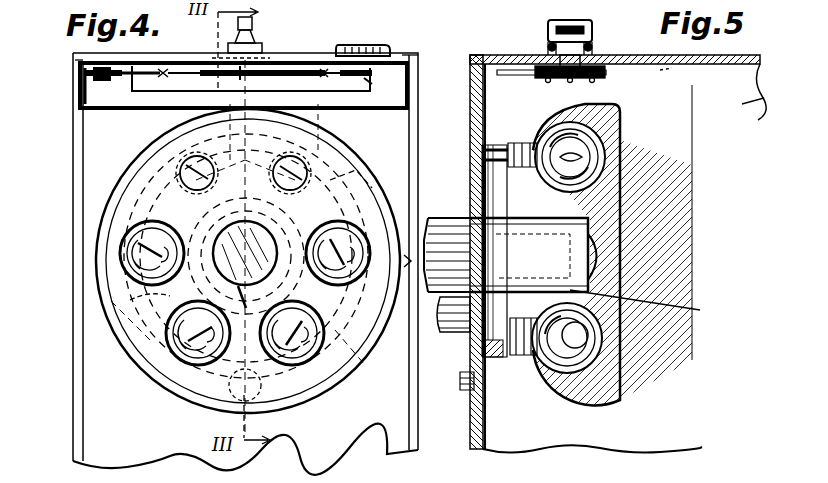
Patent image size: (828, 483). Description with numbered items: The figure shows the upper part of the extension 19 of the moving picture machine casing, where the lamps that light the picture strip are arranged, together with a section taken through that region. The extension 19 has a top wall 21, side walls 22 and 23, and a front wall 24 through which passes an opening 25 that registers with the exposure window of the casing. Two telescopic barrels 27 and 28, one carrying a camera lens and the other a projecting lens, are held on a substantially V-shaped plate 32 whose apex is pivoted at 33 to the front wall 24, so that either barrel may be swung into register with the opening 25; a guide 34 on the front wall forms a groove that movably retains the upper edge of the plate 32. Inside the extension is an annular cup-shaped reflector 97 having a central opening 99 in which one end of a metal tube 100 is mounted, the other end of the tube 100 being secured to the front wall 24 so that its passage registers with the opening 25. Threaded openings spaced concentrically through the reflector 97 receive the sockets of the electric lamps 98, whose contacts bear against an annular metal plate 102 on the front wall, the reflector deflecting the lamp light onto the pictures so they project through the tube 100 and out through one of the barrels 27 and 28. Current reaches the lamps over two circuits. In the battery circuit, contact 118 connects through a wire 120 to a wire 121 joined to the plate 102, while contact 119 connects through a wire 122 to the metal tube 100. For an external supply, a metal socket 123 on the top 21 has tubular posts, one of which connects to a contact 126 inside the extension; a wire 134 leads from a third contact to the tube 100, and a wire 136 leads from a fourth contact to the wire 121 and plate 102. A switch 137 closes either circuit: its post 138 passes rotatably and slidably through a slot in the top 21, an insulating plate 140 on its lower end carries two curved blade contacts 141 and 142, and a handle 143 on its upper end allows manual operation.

In FIG. 4, the extension 19 is at (80, 158).
In FIG. 5, the extension 19 is at (472, 74).
In FIG. 4, the top wall 21 is at (410, 60).
In FIG. 5, the top wall 21 is at (762, 56).
In FIG. 4, the side wall 22 is at (83, 382).
In FIG. 5, the side wall 22 is at (478, 450).
In FIG. 5, the side wall 23 is at (472, 426).
In FIG. 4, the front wall 24 is at (80, 124).
In FIG. 5, the front wall 24 is at (764, 98).
In FIG. 4, the opening 25 is at (268, 242).
In FIG. 5, the opening 25 is at (458, 216).
In FIG. 4, the telescopic barrel 27 is at (344, 338).
In FIG. 5, the telescopic barrel 27 is at (430, 216).
In FIG. 5, the telescopic barrel 28 is at (447, 334).
In FIG. 4, the V-shaped plate 32 is at (290, 392).
In FIG. 4, the pivot 33 is at (218, 405).
In FIG. 4, the guide 34 is at (360, 172).
In FIG. 4, the reflector 97 is at (128, 360).
In FIG. 5, the reflector 97 is at (622, 402).
In FIG. 4, the electric lamps 98 is at (148, 222).
In FIG. 5, the electric lamps 98 is at (640, 168).
In FIG. 4, the opening 99 is at (242, 306).
In FIG. 5, the opening 99 is at (700, 310).
In FIG. 4, the metal tube 100 is at (148, 300).
In FIG. 5, the metal tube 100 is at (520, 356).
In FIG. 4, the annular metal plate 102 is at (196, 156).
In FIG. 5, the annular metal plate 102 is at (472, 164).
In FIG. 4, the contact 118 is at (148, 66).
In FIG. 4, the contact 119 is at (82, 75).
In FIG. 4, the wire 120 is at (152, 97).
In FIG. 4, the wire 121 is at (326, 140).
In FIG. 5, the wire 121 is at (488, 142).
In FIG. 4, the wire 122 is at (110, 110).
In FIG. 5, the wire 122 is at (490, 150).
In FIG. 4, the metal socket 123 is at (386, 46).
In FIG. 5, the metal socket 123 is at (598, 52).
In FIG. 4, the contact 126 is at (336, 66).
In FIG. 4, the wire 134 is at (355, 110).
In FIG. 4, the wire 136 is at (366, 80).
In FIG. 4, the switch 137 is at (250, 45).
In FIG. 5, the switch 137 is at (546, 46).
In FIG. 4, the post 138 is at (214, 56).
In FIG. 5, the post 138 is at (660, 68).
In FIG. 4, the insulating plate 140 is at (266, 64).
In FIG. 5, the insulating plate 140 is at (608, 78).
In FIG. 4, the contact 141 is at (156, 100).
In FIG. 5, the contact 141 is at (526, 75).
In FIG. 4, the contact 142 is at (330, 84).
In FIG. 5, the handle 143 is at (594, 26).